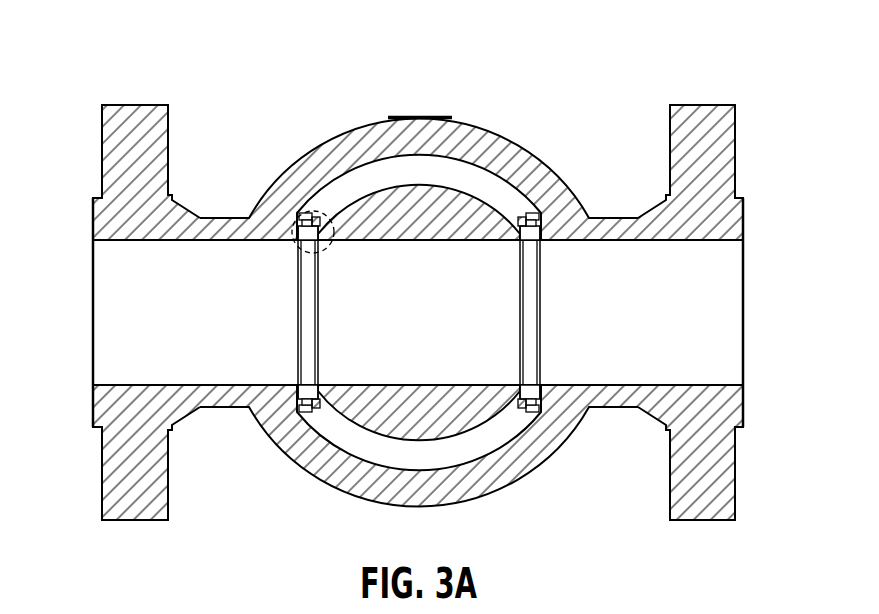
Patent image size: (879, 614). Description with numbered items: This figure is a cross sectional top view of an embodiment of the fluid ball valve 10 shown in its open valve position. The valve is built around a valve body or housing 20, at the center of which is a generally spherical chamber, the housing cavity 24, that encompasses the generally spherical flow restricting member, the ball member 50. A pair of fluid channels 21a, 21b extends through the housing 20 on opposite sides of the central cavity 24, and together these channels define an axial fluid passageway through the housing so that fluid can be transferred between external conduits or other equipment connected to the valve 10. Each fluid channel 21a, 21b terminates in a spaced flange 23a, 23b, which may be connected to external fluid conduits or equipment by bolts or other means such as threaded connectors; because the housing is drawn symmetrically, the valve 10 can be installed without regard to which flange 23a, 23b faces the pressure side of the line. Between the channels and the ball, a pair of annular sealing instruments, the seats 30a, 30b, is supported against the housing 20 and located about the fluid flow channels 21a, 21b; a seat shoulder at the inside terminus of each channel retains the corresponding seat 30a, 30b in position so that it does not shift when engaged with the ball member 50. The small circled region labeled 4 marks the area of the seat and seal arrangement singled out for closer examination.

The ball valve 10 is at (173, 45).
The housing 20 is at (362, 137).
The housing cavity 24 is at (352, 447).
The flange 23a is at (123, 130).
The flange 23b is at (728, 130).
The fluid channel 21a is at (137, 320).
The fluid channel 21b is at (715, 320).
The ball member 50 is at (458, 418).
The seat 30a is at (300, 312).
The seat 30b is at (538, 312).
The seal detail region 4 is at (303, 212).